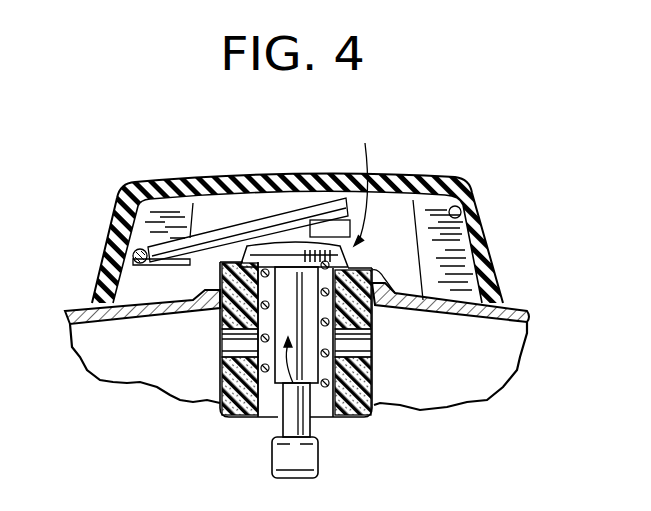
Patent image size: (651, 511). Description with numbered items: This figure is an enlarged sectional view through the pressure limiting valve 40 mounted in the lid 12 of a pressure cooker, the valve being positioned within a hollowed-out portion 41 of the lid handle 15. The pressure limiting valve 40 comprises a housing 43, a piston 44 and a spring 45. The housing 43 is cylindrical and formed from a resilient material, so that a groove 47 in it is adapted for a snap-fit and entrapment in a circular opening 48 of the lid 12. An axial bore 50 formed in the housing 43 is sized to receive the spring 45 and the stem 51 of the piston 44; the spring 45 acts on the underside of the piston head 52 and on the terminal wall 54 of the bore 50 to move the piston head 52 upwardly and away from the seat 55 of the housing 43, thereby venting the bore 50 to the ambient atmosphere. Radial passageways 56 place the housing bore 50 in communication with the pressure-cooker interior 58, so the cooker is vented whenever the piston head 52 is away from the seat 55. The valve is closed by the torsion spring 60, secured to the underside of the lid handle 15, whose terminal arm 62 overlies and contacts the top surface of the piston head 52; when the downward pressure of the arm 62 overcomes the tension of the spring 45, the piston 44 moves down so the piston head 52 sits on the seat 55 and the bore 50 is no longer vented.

The lid 12 is at (75, 316).
The lid handle 15 is at (138, 182).
The pressure limiting valve 40 is at (358, 182).
The hollowed-out portion 41 is at (456, 207).
The housing 43 is at (217, 321).
The piston 44 is at (312, 422).
The spring 45 is at (222, 378).
The groove 47 is at (372, 330).
The circular opening 48 is at (373, 274).
The axial bore 50 is at (228, 413).
The stem 51 is at (373, 377).
The piston head 52 is at (278, 258).
The terminal wall 54 is at (266, 414).
The seat 55 is at (390, 268).
The radial passageways 56 is at (218, 348).
The pressure-cooker interior 58 is at (88, 336).
The torsion spring 60 is at (132, 262).
The terminal arm 62 is at (213, 237).